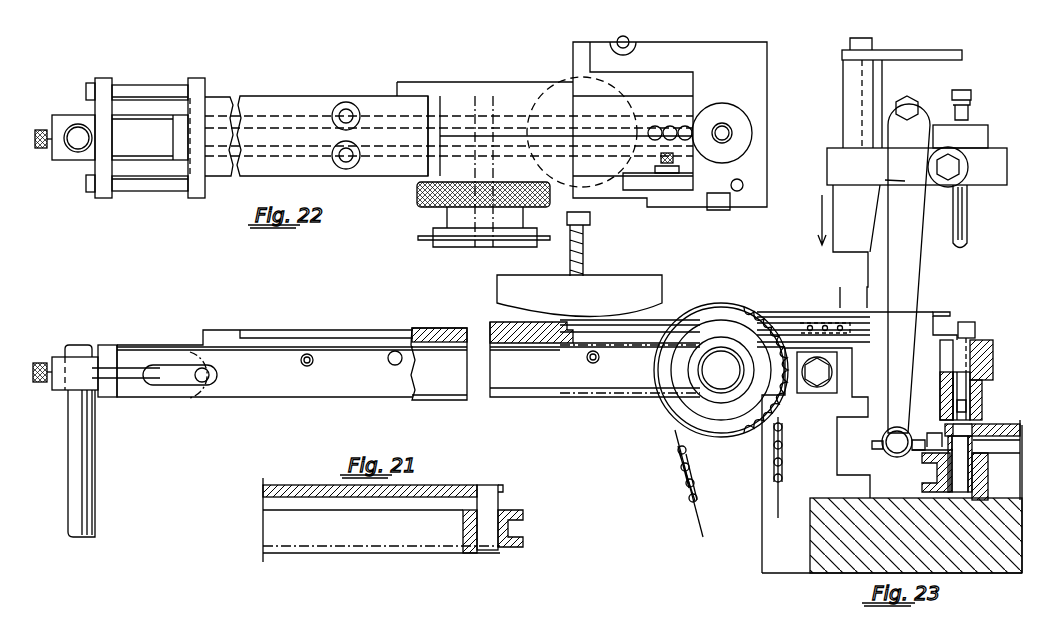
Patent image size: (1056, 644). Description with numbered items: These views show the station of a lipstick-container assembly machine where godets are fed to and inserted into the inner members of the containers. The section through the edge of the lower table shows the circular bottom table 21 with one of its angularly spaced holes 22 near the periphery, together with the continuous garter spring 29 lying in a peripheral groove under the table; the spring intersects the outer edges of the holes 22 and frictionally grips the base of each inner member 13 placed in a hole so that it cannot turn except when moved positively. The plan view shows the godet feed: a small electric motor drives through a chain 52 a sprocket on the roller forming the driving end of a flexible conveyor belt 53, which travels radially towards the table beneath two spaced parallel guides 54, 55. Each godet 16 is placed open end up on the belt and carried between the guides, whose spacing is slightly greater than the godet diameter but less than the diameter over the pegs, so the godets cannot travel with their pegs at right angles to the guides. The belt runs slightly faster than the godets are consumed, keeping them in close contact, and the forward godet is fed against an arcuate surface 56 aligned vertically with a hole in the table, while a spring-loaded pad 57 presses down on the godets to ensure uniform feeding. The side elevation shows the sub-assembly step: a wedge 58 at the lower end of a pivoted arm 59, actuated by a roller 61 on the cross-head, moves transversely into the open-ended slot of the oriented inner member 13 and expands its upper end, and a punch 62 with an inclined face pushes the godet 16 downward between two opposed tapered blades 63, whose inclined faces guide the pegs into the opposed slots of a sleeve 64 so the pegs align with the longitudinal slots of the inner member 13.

In FIG. 23, the inner member 13 is at (968, 471).
In FIG. 21, the godet 16 is at (815, 324).
In FIG. 23, the godet 16 is at (975, 401).
In FIG. 21, the bottom table 21 is at (297, 488).
In FIG. 23, the bottom table 21 is at (1012, 433).
In FIG. 21, the holes 22 is at (490, 490).
In FIG. 21, the garter spring 29 is at (500, 548).
In FIG. 21, the chain 52 is at (676, 457).
In FIG. 22, the conveyor belt 53 is at (254, 130).
In FIG. 21, the conveyor belt 53 is at (378, 334).
In FIG. 22, the guide 54 is at (220, 106).
In FIG. 22, the guide 55 is at (249, 165).
In FIG. 21, the guide 55 is at (287, 331).
In FIG. 23, the arcuate surface 56 is at (976, 323).
In FIG. 22, the spring-loaded pad 57 is at (367, 101).
In FIG. 21, the spring-loaded pad 57 is at (638, 288).
In FIG. 23, the wedge 58 is at (938, 441).
In FIG. 23, the pivoted arm 59 is at (905, 279).
In FIG. 23, the roller 61 is at (963, 181).
In FIG. 23, the punch 62 is at (965, 210).
In FIG. 23, the blades 63 is at (965, 376).
In FIG. 23, the sleeve 64 is at (975, 418).